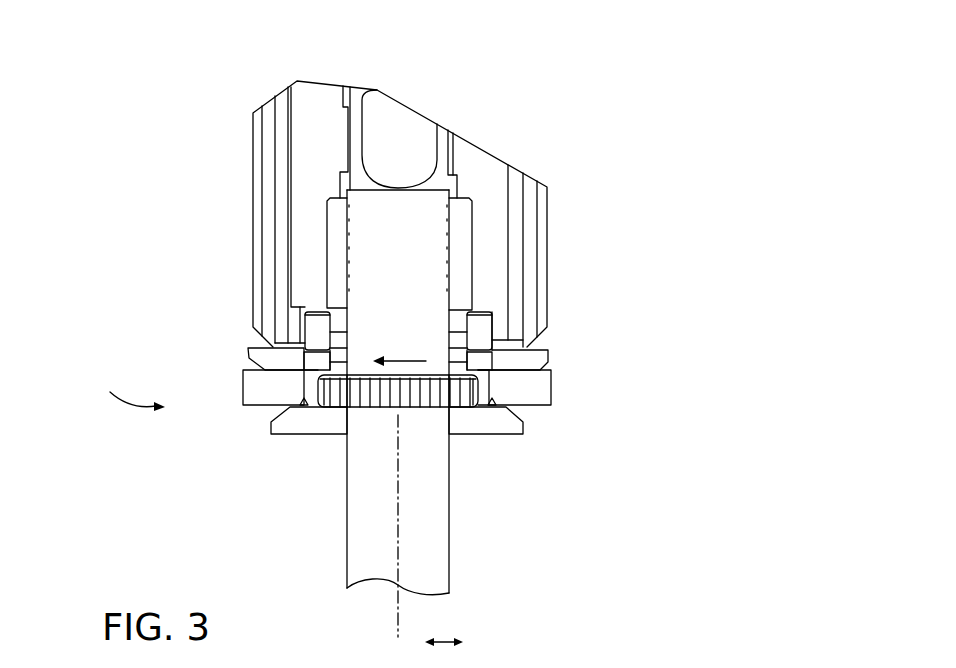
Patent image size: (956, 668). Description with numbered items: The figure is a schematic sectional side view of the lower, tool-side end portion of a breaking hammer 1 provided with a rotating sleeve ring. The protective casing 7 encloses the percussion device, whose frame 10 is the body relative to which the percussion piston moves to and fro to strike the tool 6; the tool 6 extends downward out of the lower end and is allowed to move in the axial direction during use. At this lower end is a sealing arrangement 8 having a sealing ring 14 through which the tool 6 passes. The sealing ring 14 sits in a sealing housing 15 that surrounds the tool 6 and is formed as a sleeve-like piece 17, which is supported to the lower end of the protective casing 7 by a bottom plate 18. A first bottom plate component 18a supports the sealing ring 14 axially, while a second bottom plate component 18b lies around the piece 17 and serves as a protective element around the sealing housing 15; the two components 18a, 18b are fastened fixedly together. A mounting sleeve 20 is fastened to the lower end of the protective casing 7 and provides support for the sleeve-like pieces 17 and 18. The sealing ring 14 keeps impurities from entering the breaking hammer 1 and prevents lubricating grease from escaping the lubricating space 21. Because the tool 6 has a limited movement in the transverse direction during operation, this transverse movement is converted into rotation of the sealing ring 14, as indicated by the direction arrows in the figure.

The breaking hammer 1 is at (148, 82).
The tool 6 is at (356, 557).
The protective casing 7 is at (257, 232).
The sealing arrangement 8 is at (630, 364).
The frame 10 is at (481, 172).
The sealing ring 14 is at (452, 398).
The sealing housing 15 is at (490, 395).
The sleeve-like piece 17 is at (485, 378).
The bottom plate 18 is at (249, 435).
The first bottom plate component 18a is at (313, 424).
The second bottom plate component 18b is at (253, 392).
The mounting sleeve 20 is at (267, 353).
The lubricating space 21 is at (457, 302).